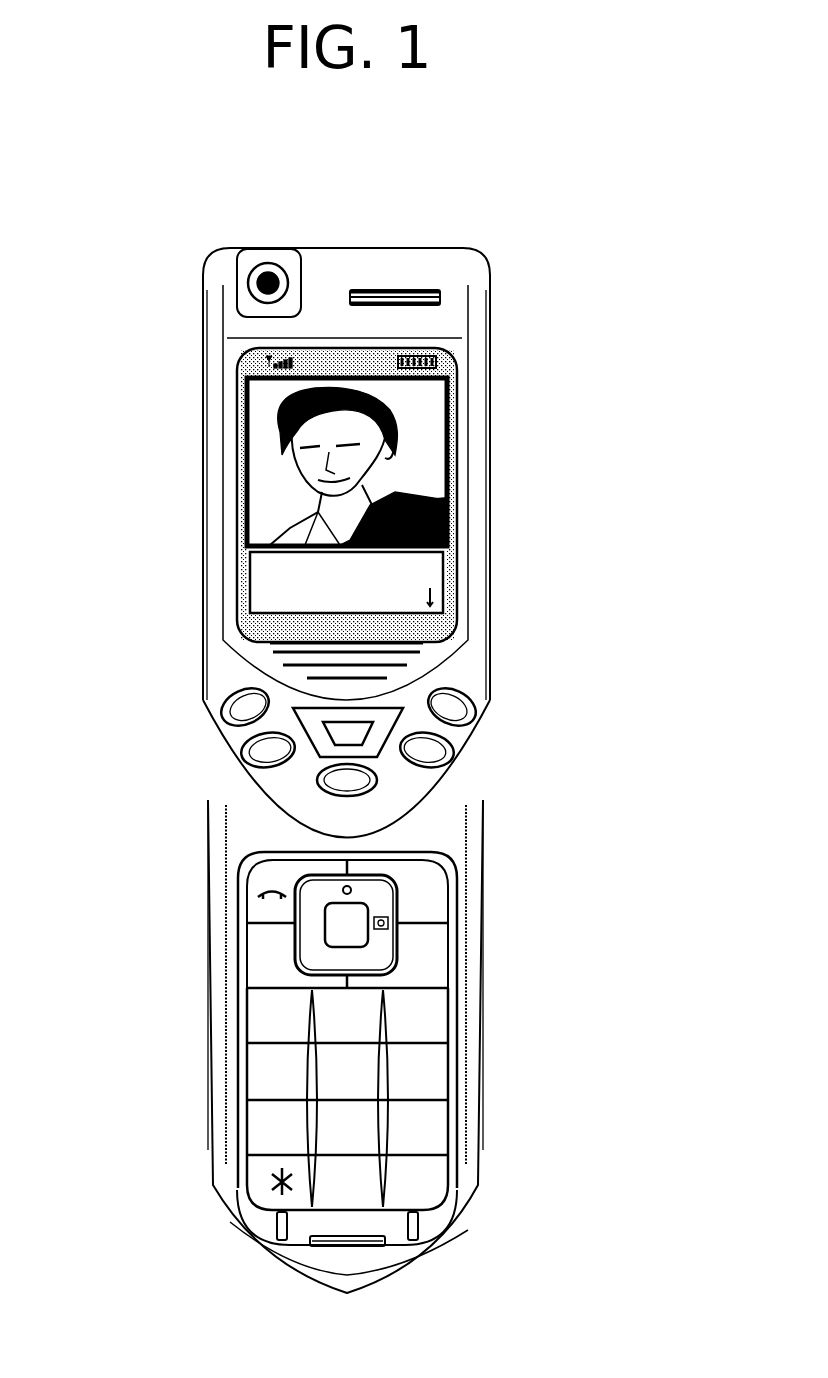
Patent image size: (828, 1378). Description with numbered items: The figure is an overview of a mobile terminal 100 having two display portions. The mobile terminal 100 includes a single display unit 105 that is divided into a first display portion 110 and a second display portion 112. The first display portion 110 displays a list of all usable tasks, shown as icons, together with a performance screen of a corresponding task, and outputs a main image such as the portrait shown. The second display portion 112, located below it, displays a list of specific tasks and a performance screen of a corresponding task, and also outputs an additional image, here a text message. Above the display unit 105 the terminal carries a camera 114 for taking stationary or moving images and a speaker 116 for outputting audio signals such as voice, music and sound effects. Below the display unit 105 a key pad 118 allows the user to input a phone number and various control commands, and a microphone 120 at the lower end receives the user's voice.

The mobile terminal 100 is at (172, 258).
The display unit 105 is at (448, 373).
The first display portion 110 is at (448, 436).
The second display portion 112 is at (448, 567).
The camera 114 is at (290, 248).
The speaker 116 is at (446, 248).
The key pad 118 is at (450, 947).
The microphone 120 is at (373, 1245).